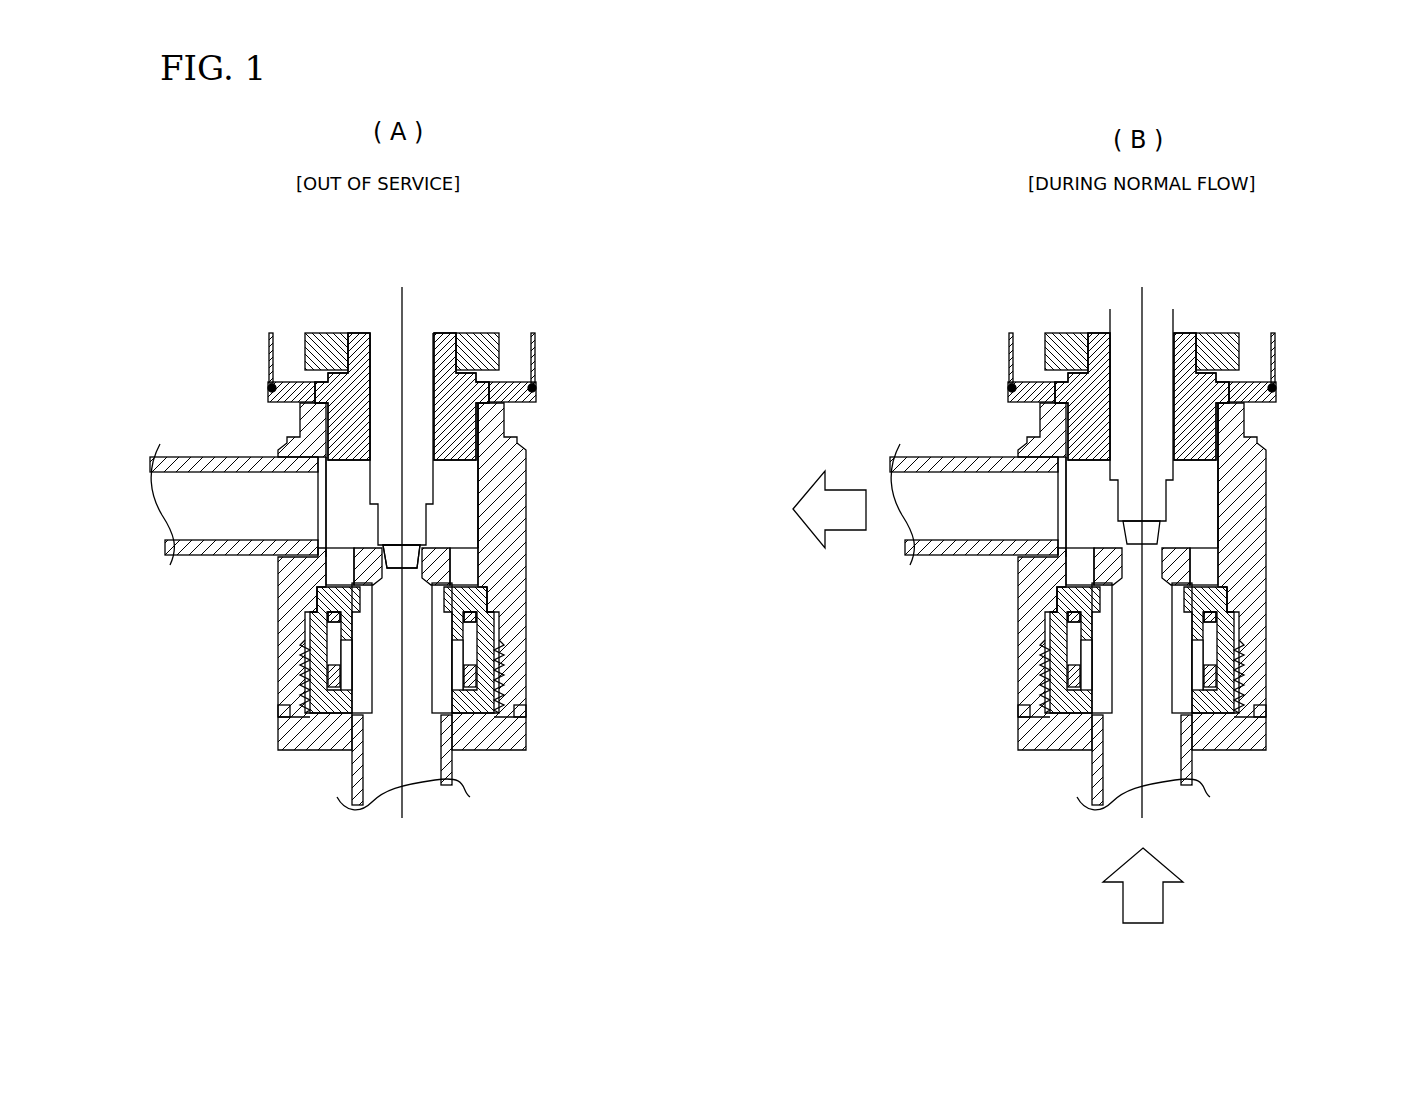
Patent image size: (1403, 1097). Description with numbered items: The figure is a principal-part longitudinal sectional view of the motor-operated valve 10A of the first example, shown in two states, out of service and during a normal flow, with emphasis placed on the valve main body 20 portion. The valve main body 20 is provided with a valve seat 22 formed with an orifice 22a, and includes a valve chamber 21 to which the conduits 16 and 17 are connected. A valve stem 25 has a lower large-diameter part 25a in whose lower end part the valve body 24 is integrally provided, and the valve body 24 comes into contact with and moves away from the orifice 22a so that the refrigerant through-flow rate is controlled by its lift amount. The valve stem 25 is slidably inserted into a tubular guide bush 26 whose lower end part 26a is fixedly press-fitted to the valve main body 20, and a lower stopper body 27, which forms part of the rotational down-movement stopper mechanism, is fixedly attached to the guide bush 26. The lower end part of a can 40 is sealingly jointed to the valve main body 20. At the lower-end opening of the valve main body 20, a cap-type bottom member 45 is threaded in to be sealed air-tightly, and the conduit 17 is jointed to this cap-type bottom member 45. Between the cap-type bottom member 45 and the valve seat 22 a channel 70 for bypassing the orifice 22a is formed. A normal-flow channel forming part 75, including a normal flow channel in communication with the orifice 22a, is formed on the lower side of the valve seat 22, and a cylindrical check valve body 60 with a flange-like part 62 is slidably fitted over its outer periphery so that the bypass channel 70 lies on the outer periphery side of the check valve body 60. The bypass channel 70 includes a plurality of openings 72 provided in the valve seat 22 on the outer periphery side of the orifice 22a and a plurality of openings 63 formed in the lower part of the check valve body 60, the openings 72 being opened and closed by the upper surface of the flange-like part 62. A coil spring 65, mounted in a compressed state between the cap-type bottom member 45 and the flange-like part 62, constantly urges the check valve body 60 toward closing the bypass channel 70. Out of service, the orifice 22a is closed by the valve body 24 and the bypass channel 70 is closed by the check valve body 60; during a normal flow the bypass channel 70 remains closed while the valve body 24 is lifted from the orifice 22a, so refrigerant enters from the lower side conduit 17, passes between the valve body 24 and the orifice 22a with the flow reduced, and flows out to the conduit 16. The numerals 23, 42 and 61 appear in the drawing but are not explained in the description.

The motor-operated valve 10A is at (242, 310).
The conduit 16 is at (202, 558).
The conduit 17 is at (355, 787).
The valve main body 20 is at (526, 665).
The valve chamber 21 is at (463, 500).
The valve seat 22 is at (438, 547).
The orifice 22a is at (318, 590).
The nut 23 is at (508, 404).
The valve body 24 is at (385, 548).
The valve stem 25 is at (425, 472).
The lower large-diameter part 25a is at (402, 475).
The guide bush 26 is at (470, 437).
The lower end part 26a is at (402, 396).
The lower stopper body 27 is at (532, 393).
The can 40 is at (538, 355).
The inlet port 42 is at (320, 403).
The cap-type bottom member 45 is at (293, 748).
The check valve body 60 is at (470, 625).
The packing ring 61 is at (402, 617).
The flange-like part 62 is at (310, 618).
The openings 63 is at (300, 658).
The coil spring 65 is at (283, 708).
The bypass channel 70 is at (497, 603).
The openings 72 is at (326, 560).
The normal-flow channel forming part 75 is at (500, 663).